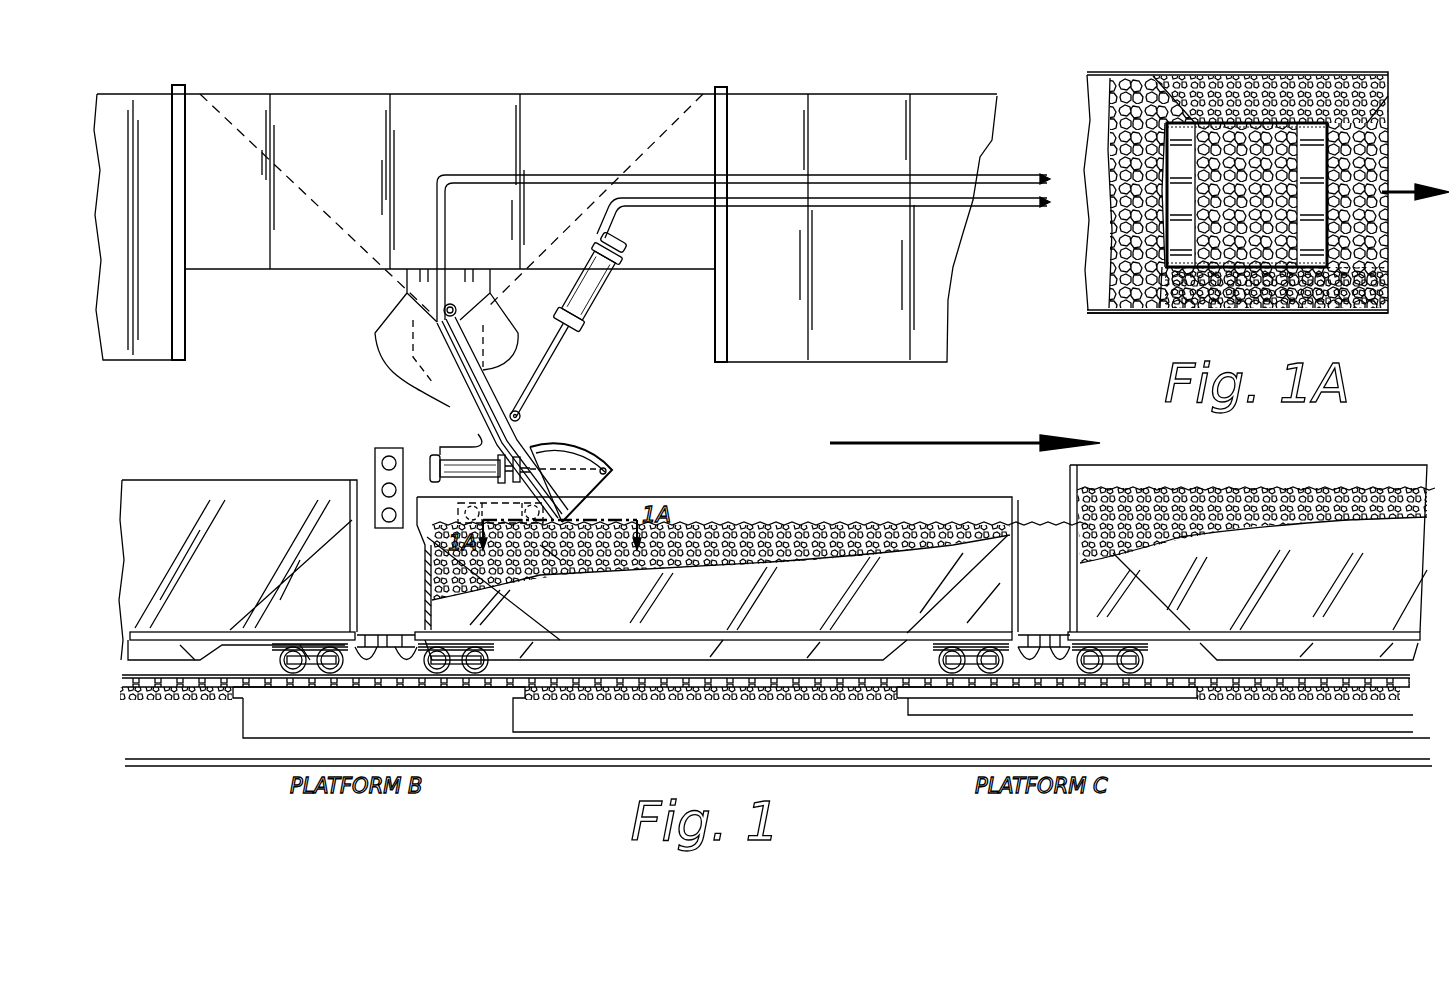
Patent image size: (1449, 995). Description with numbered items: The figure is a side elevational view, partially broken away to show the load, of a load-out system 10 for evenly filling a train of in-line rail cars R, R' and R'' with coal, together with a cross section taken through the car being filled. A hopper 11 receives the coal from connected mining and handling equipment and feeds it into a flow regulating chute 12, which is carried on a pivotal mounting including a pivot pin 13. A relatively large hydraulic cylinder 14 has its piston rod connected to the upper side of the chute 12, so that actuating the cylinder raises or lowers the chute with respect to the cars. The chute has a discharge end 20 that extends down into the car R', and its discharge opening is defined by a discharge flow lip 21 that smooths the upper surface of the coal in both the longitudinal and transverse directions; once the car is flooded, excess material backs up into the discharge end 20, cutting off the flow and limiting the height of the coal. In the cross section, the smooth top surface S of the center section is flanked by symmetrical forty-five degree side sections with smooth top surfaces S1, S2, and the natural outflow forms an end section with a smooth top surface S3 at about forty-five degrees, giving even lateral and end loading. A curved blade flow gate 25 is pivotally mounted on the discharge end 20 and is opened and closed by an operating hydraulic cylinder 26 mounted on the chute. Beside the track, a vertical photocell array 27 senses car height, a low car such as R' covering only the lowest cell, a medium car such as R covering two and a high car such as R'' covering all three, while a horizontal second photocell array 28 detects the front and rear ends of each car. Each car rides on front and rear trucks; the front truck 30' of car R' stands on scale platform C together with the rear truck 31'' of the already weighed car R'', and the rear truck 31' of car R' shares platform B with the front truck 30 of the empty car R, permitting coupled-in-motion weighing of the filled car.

In FIG. 1, the load-out system 10 is at (749, 83).
In FIG. 1, the hopper 11 is at (420, 117).
In FIG. 1, the flow regulating chute 12 is at (470, 402).
In FIG. 1, the pivot pin 13 is at (445, 312).
In FIG. 1, the hydraulic cylinder 14 is at (580, 303).
In FIG. 1, the discharge end 20 is at (560, 523).
In FIG. 1A, the discharge end 20 is at (1305, 140).
In FIG. 1, the discharge flow lip 21 is at (545, 557).
In FIG. 1A, the discharge flow lip 21 is at (1350, 130).
In FIG. 1, the curved blade flow gate 25 is at (582, 441).
In FIG. 1, the operating hydraulic cylinder 26 is at (468, 455).
In FIG. 1, the photocell array 27 is at (375, 470).
In FIG. 1, the second photocell array 28 is at (458, 513).
In FIG. 1, the front truck 30 is at (332, 629).
In FIG. 1, the rear truck 31' is at (481, 630).
In FIG. 1, the front truck 30' is at (1000, 636).
In FIG. 1, the rear truck 31'' is at (1153, 628).
In FIG. 1, the rail car R is at (238, 551).
In FIG. 1, the rail car R' is at (751, 564).
In FIG. 1A, the rail car R' is at (1257, 330).
In FIG. 1, the rail car R'' is at (1251, 545).
In FIG. 1A, the top surface S is at (1356, 212).
In FIG. 1A, the side section top surface S1 is at (1367, 110).
In FIG. 1A, the side section top surface S2 is at (1337, 283).
In FIG. 1A, the end section top surface S3 is at (1120, 153).